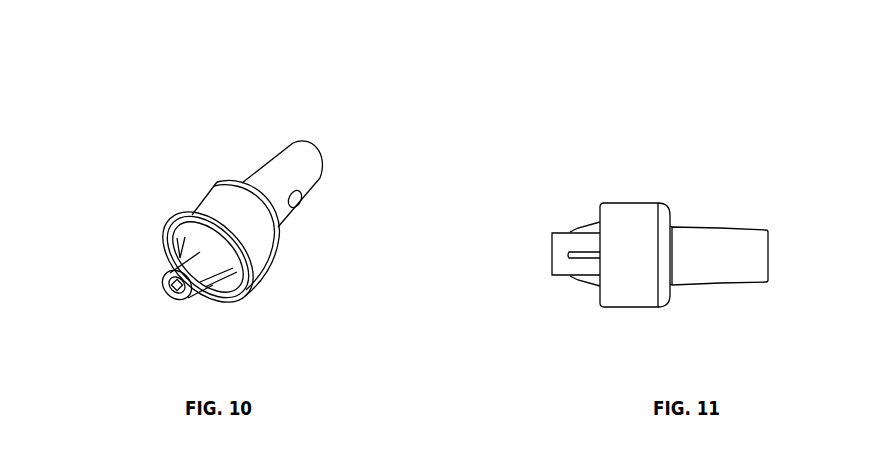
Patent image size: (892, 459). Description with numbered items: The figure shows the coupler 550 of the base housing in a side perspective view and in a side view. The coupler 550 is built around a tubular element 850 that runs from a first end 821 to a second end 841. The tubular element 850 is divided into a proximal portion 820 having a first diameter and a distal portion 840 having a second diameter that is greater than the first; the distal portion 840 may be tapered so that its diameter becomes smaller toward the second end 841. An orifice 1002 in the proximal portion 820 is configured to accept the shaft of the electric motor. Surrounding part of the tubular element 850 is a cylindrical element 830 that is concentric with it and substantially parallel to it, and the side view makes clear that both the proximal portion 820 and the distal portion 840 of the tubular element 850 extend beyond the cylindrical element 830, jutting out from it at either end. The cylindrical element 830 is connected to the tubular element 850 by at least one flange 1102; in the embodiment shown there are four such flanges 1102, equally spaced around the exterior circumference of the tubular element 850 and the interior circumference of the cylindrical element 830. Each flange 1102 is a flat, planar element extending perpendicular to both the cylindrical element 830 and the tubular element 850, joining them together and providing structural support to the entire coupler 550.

In FIG. 10, the coupler 550 is at (180, 188).
In FIG. 11, the coupler 550 is at (620, 173).
In FIG. 10, the tubular element 850 is at (255, 163).
In FIG. 11, the tubular element 850 is at (680, 227).
In FIG. 10, the second end 841 is at (322, 147).
In FIG. 11, the distal portion 840 is at (720, 227).
In FIG. 10, the cylindrical element 830 is at (253, 252).
In FIG. 10, the first end 821 is at (158, 297).
In FIG. 11, the proximal portion 820 is at (562, 247).
In FIG. 10, the orifice 1002 is at (158, 277).
In FIG. 11, the flange 1102 is at (583, 228).